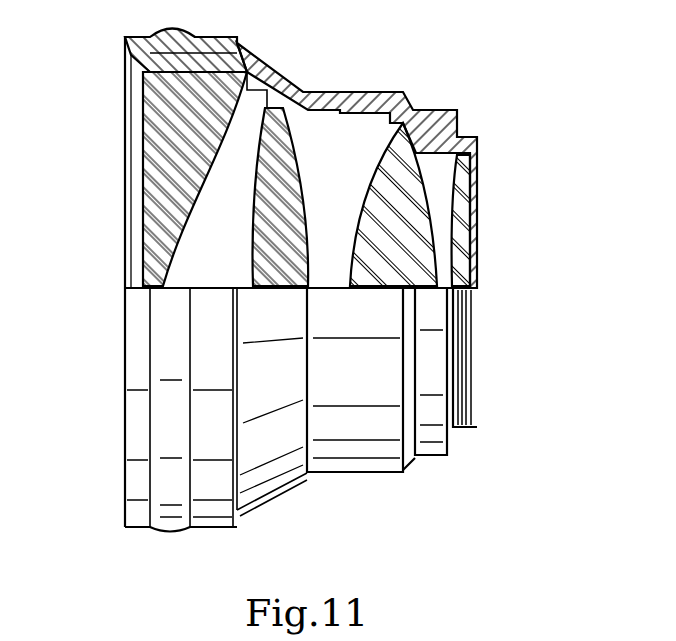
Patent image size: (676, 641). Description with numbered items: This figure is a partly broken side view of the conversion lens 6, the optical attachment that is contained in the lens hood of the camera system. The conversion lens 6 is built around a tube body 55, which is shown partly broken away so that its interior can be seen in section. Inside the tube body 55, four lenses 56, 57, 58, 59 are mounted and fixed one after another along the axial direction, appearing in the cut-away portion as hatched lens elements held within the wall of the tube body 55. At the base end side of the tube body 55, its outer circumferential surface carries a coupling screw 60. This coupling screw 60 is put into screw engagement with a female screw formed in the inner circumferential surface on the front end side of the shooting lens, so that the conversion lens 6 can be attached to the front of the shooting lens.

The conversion lens 6 is at (380, 60).
The tube body 55 is at (265, 73).
The lens 56 is at (172, 166).
The lens 57 is at (288, 160).
The lens 58 is at (412, 253).
The lens 59 is at (470, 208).
The coupling screw 60 is at (468, 432).